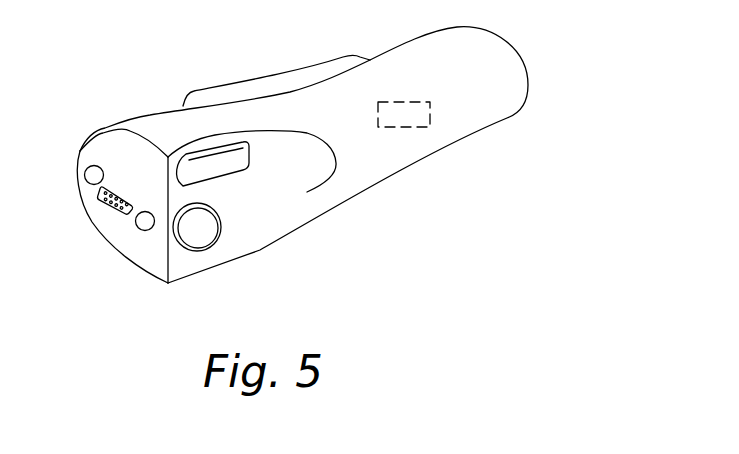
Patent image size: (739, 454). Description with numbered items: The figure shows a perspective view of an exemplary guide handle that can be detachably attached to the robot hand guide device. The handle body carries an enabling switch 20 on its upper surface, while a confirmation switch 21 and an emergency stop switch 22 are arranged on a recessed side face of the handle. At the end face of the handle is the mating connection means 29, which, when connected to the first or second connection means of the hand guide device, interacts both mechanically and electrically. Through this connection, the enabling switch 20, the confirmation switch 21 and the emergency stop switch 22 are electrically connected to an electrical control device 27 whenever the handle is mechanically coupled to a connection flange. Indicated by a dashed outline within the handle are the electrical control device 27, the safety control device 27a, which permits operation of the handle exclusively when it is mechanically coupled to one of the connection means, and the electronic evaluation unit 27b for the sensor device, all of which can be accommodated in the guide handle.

The enabling switch 20 is at (278, 89).
The confirmation switch 21 is at (213, 164).
The emergency stop switch 22 is at (193, 222).
The electrical control device 27 is at (465, 168).
The safety control device 27a is at (465, 168).
The electronic evaluation unit 27b is at (410, 118).
The mating connection means 29 is at (111, 203).